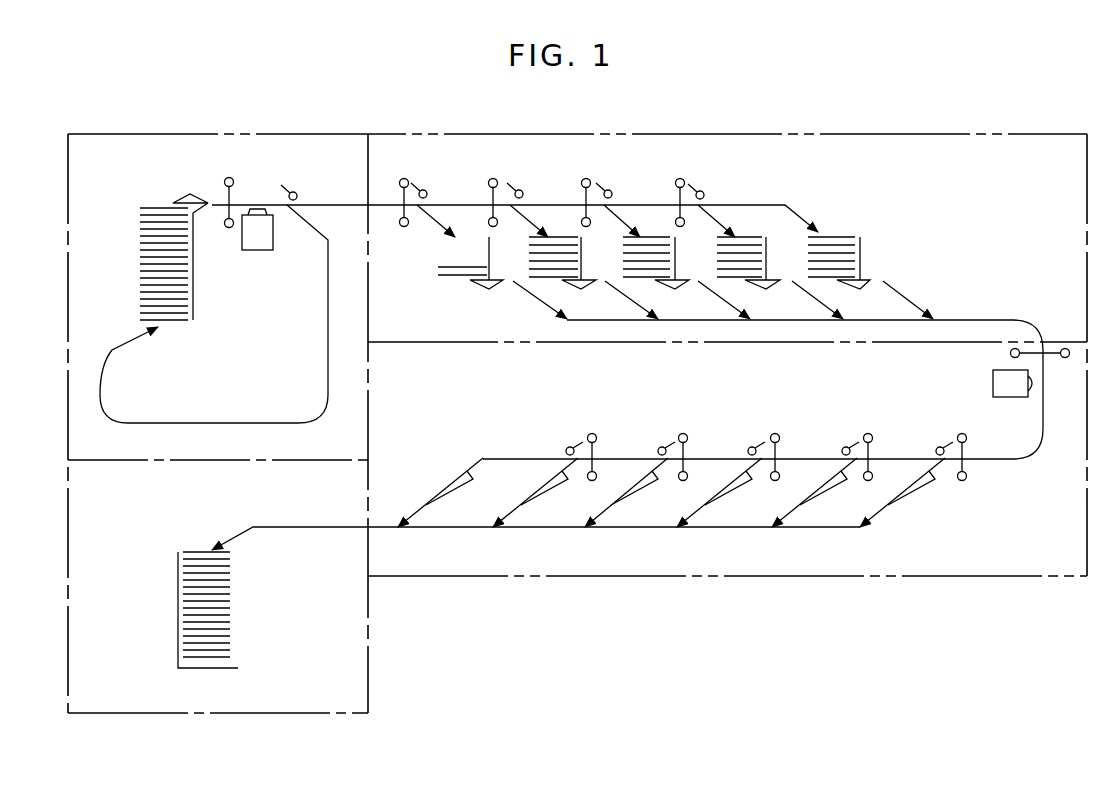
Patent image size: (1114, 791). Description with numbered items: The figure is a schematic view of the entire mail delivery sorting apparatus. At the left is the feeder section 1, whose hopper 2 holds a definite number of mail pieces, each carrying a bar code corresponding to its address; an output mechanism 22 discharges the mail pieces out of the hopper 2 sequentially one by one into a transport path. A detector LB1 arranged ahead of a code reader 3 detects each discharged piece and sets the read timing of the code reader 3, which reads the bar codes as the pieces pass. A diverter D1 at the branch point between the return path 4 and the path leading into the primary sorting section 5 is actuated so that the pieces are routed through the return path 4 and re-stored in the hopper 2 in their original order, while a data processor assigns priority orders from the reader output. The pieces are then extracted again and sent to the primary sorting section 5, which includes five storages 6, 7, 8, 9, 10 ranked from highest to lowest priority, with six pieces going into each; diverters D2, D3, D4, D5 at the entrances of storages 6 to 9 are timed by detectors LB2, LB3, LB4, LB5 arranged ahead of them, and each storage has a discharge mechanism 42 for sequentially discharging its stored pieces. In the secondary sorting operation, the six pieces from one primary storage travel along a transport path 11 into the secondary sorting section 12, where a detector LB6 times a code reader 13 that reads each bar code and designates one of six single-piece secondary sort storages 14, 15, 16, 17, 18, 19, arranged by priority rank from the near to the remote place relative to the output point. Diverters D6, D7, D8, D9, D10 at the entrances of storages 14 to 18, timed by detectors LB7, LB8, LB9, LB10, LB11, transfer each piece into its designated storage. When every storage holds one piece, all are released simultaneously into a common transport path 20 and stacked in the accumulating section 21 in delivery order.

The feeder section 1 is at (100, 150).
The hopper 2 is at (140, 282).
The code reader 3 is at (273, 240).
The return path 4 is at (216, 423).
The primary sorting section 5 is at (877, 144).
The storage 6 is at (436, 277).
The storage 7 is at (529, 258).
The storage 8 is at (623, 258).
The storage 9 is at (717, 258).
The storage 10 is at (808, 258).
The transport path 11 is at (1013, 320).
The secondary sorting section 12 is at (880, 580).
The code reader 13 is at (993, 385).
The secondary sort storage 14 is at (910, 492).
The secondary sort storage 15 is at (820, 492).
The secondary sort storage 16 is at (727, 492).
The secondary sort storage 17 is at (637, 492).
The secondary sort storage 18 is at (549, 492).
The secondary sort storage 19 is at (455, 492).
The common transport path 20 is at (293, 530).
The accumulating section 21 is at (232, 617).
The output mechanism 22 is at (190, 194).
The discharge mechanism 42 is at (480, 289).
The detector LB1 is at (229, 178).
The detector LB2 is at (403, 178).
The detector LB3 is at (492, 178).
The detector LB4 is at (585, 178).
The detector LB5 is at (679, 178).
The detector LB6 is at (1052, 358).
The detector LB7 is at (961, 433).
The detector LB8 is at (867, 433).
The detector LB9 is at (774, 433).
The detector LB10 is at (682, 433).
The detector LB11 is at (591, 433).
The diverter D1 is at (286, 182).
The diverter D2 is at (428, 188).
The diverter D3 is at (524, 188).
The diverter D4 is at (614, 188).
The diverter D5 is at (706, 188).
The diverter D6 is at (938, 447).
The diverter D7 is at (843, 447).
The diverter D8 is at (749, 447).
The diverter D9 is at (659, 447).
The diverter D10 is at (568, 447).